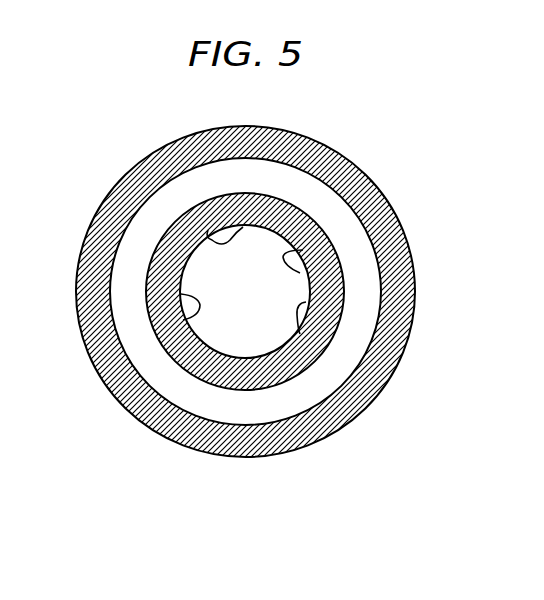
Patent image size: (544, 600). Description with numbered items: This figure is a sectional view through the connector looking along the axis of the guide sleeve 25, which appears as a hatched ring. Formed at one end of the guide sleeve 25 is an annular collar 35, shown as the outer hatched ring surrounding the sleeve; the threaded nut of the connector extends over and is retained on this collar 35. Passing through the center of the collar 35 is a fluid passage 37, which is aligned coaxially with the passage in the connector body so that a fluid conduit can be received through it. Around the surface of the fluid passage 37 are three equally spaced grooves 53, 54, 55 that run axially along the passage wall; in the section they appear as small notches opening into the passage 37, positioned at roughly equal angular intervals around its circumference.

The guide sleeve 25 is at (320, 463).
The annular collar 35 is at (372, 189).
The fluid passage 37 is at (283, 257).
The groove 53 is at (297, 315).
The groove 54 is at (224, 245).
The groove 55 is at (200, 306).